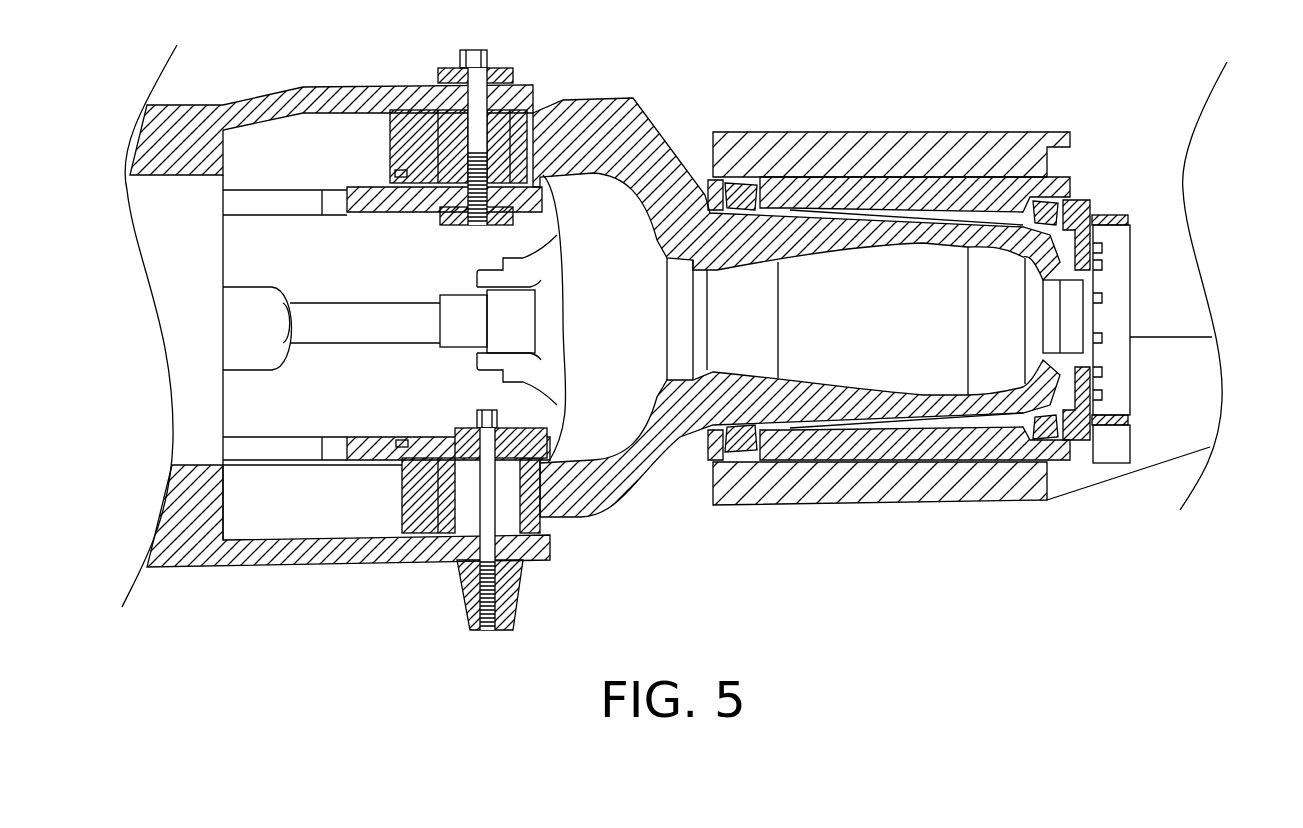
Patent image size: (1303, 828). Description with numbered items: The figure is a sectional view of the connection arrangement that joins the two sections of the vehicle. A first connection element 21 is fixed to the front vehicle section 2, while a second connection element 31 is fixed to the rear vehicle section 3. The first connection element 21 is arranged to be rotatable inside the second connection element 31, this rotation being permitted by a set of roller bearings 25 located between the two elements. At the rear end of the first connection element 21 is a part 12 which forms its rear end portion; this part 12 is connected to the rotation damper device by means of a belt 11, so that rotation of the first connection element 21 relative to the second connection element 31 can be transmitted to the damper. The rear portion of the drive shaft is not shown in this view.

The front vehicle section 2 is at (328, 100).
The first connection element 21 is at (657, 193).
The roller bearings 25 is at (753, 192).
The second connection element 31 is at (855, 193).
The rear vehicle section 3 is at (950, 153).
The belt 11 is at (1118, 217).
The part 12 is at (1115, 297).